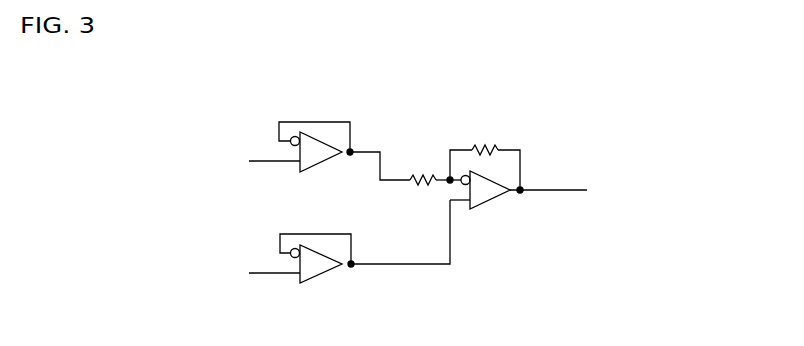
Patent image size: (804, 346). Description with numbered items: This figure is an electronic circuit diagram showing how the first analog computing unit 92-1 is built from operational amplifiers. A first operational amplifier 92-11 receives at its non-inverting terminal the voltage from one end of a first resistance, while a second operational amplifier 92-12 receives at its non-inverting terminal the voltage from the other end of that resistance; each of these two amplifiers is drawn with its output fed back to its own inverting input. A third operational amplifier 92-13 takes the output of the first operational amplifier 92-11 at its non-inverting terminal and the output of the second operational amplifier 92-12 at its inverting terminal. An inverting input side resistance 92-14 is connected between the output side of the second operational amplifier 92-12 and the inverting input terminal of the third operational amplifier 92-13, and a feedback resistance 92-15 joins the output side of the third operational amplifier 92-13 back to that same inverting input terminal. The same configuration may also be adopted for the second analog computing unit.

The first analog computing unit 92-1 is at (270, 55).
The first operational amplifier 92-11 is at (318, 280).
The second operational amplifier 92-12 is at (318, 168).
The third operational amplifier 92-13 is at (491, 206).
The inverting input side resistance 92-14 is at (412, 177).
The feedback resistance 92-15 is at (478, 145).